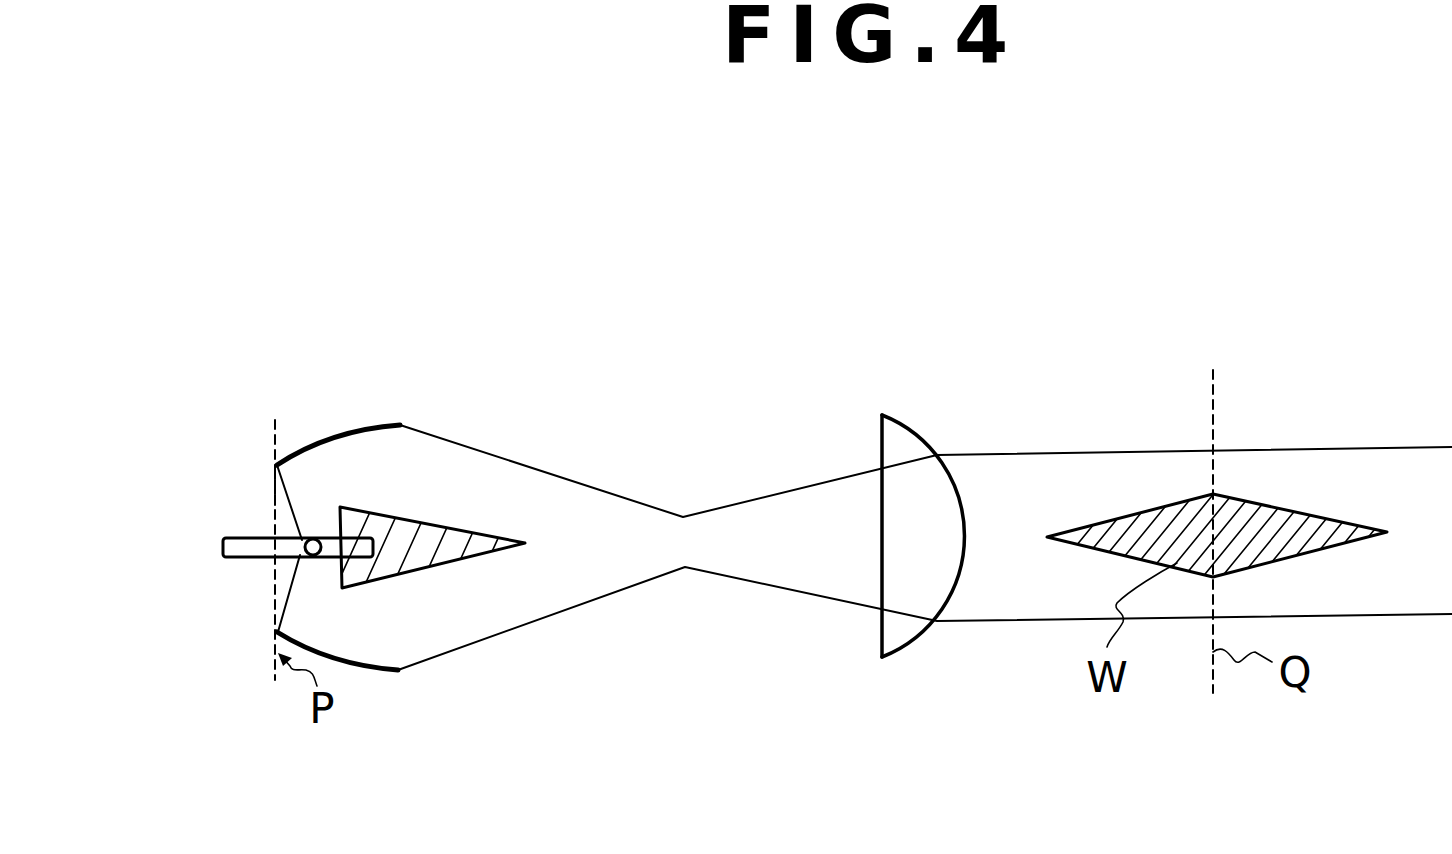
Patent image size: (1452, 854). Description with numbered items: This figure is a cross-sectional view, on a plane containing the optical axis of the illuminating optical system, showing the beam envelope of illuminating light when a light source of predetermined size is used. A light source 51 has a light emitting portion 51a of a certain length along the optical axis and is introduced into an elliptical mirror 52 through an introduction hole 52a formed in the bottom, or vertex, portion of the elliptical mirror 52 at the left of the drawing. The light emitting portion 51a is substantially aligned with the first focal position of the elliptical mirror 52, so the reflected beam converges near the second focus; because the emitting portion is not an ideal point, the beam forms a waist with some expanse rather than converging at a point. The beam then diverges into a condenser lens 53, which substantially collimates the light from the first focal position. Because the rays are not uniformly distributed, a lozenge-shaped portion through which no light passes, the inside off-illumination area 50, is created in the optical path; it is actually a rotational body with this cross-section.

The inside off-illumination area 50 is at (1277, 507).
The light source 51 is at (373, 510).
The light emitting portion 51a is at (313, 556).
The elliptical mirror 52 is at (350, 434).
The introduction hole 52a is at (262, 490).
The condenser lens 53 is at (900, 435).